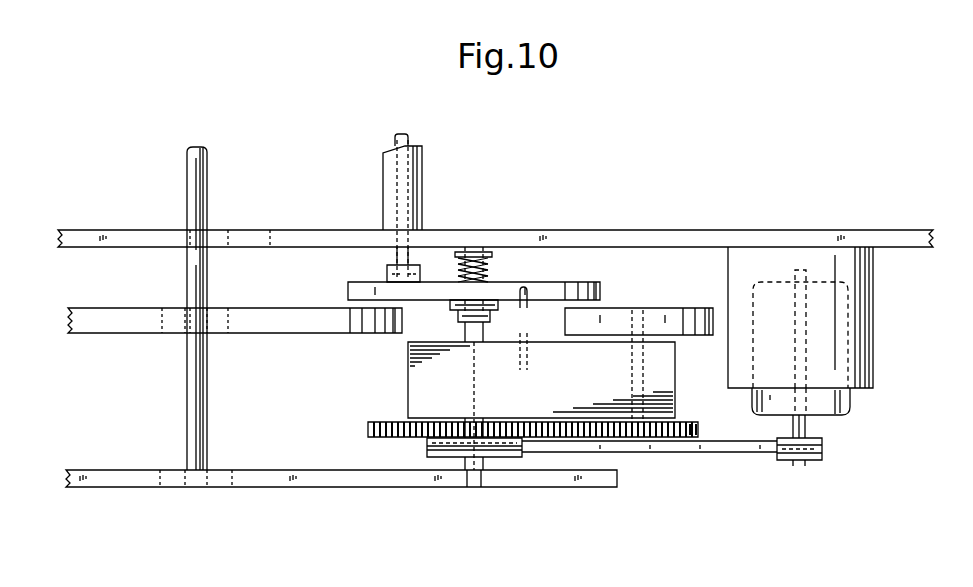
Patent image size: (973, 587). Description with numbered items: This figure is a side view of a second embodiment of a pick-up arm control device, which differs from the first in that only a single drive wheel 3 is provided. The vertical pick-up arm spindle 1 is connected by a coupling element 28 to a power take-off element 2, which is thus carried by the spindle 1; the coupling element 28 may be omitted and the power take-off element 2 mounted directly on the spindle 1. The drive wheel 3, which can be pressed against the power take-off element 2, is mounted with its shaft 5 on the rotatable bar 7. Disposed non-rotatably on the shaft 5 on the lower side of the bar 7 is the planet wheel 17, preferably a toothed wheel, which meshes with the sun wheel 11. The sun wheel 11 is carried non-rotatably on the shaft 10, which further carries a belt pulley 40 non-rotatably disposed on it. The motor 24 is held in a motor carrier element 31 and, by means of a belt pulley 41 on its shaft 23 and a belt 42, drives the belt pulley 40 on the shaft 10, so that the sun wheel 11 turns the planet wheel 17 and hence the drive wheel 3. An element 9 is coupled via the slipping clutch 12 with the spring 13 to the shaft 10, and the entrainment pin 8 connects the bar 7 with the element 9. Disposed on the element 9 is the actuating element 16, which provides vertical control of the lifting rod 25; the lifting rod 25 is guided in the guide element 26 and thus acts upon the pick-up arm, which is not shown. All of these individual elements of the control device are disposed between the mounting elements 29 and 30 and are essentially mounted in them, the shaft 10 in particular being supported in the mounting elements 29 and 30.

The pick-up arm spindle 1 is at (192, 412).
The power take-off element 2 is at (88, 311).
The drive wheel 3 is at (671, 308).
The shaft 5 is at (630, 372).
The bar 7 is at (408, 380).
The entrainment pin 8 is at (528, 318).
The element 9 is at (348, 290).
The shaft 10 is at (466, 469).
The sun wheel 11 is at (372, 434).
The slipping clutch 12 is at (452, 315).
The spring 13 is at (493, 268).
The actuating element 16 is at (387, 271).
The planet wheel 17 is at (696, 422).
The shaft of the motor 23 is at (800, 466).
The motor 24 is at (850, 406).
The lifting rod 25 is at (414, 194).
The guide element 26 is at (383, 182).
The coupling element 28 is at (178, 312).
The mounting element 29 is at (289, 487).
The mounting element 30 is at (824, 247).
The motor carrier element 31 is at (872, 292).
The belt pulley 40 is at (517, 457).
The belt pulley 41 is at (822, 454).
The belt 42 is at (666, 452).